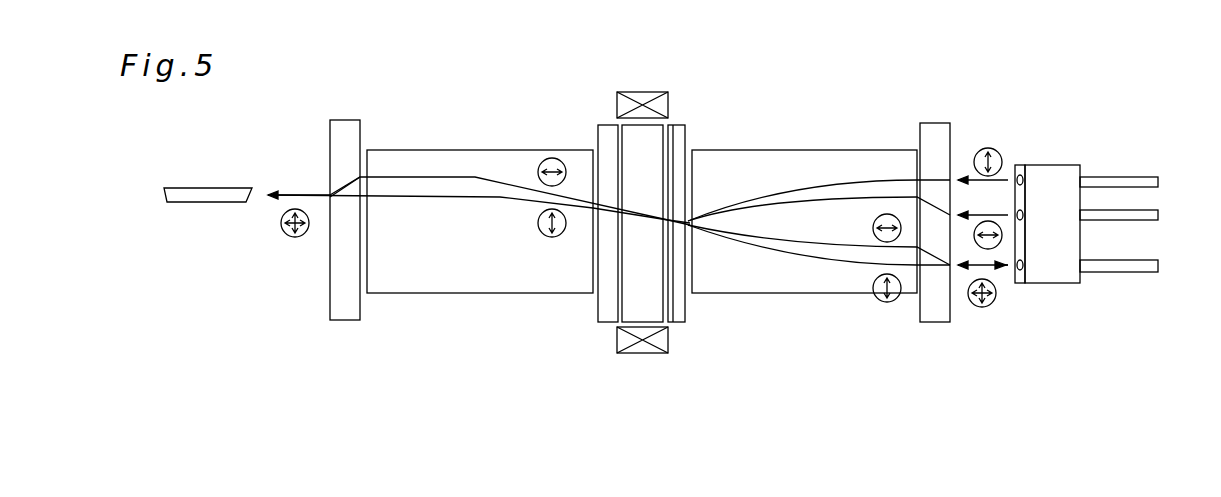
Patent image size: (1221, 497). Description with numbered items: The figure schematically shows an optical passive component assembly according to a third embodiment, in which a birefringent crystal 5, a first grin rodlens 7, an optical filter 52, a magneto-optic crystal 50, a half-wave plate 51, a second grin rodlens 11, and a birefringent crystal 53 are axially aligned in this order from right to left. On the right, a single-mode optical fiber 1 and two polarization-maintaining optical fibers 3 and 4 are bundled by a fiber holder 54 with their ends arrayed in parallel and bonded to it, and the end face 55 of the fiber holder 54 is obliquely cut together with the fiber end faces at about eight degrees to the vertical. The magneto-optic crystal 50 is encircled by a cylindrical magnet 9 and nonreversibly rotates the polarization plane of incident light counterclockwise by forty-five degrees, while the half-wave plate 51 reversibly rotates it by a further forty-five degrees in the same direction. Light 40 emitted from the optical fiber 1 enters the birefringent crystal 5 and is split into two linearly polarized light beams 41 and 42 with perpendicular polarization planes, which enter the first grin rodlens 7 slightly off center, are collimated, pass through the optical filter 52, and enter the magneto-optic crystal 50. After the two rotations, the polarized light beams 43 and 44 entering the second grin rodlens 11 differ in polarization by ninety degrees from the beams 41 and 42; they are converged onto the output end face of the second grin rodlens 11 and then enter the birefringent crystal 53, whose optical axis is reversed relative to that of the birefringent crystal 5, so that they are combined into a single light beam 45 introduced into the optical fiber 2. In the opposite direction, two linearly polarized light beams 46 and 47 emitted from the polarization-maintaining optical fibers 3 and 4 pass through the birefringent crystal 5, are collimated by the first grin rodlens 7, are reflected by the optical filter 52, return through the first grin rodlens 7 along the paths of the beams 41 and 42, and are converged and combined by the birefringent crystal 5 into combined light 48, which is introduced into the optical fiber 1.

The single-mode optical fiber 1 is at (1123, 272).
The optical fiber 2 is at (208, 188).
The polarization-maintaining optical fiber 3 is at (1100, 177).
The polarization-maintaining optical fiber 4 is at (1125, 210).
The birefringent crystal 5 is at (930, 320).
The first grin rodlens 7 is at (772, 280).
The cylindrical magnet 9 is at (668, 105).
The second grin rodlens 11 is at (438, 282).
The light 40 is at (958, 268).
The linearly polarized light beam 41 is at (857, 265).
The linearly polarized light beam 42 is at (820, 247).
The polarized light beam 43 is at (477, 178).
The polarized light beam 44 is at (455, 197).
The single light beam 45 is at (272, 193).
The linearly polarized light beam 46 is at (958, 178).
The linearly polarized light beam 47 is at (956, 213).
The combined light 48 is at (1005, 270).
The magneto-optic crystal 50 is at (627, 305).
The half-wave plate 51 is at (607, 303).
The optical filter 52 is at (687, 312).
The birefringent crystal 53 is at (330, 297).
The fiber holder 54 is at (1058, 283).
The end face 55 is at (1020, 165).